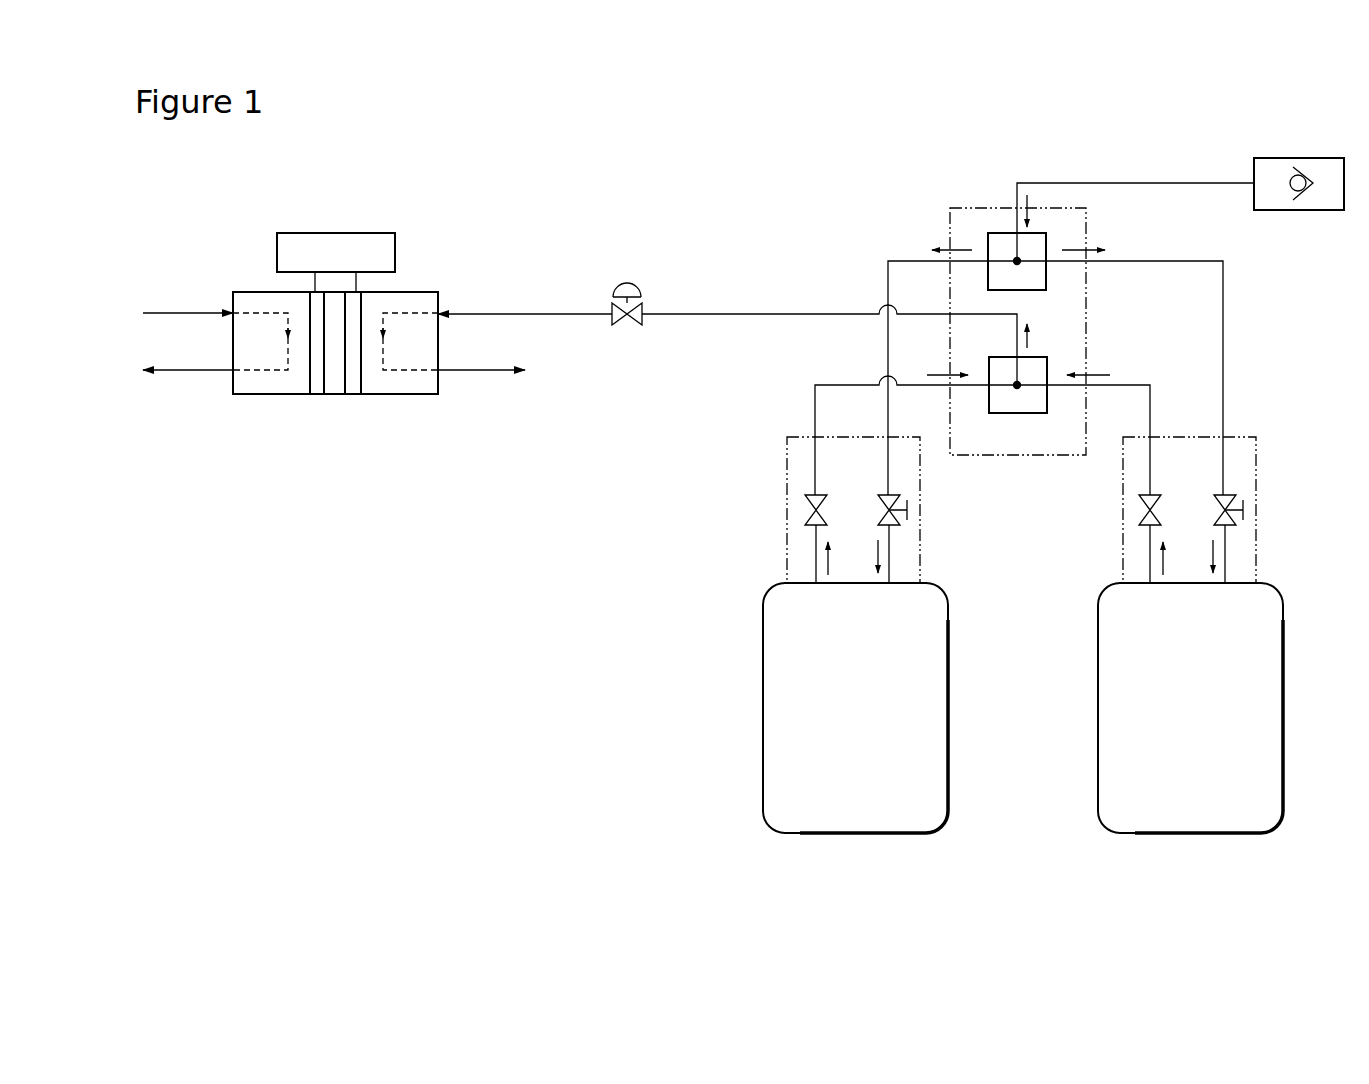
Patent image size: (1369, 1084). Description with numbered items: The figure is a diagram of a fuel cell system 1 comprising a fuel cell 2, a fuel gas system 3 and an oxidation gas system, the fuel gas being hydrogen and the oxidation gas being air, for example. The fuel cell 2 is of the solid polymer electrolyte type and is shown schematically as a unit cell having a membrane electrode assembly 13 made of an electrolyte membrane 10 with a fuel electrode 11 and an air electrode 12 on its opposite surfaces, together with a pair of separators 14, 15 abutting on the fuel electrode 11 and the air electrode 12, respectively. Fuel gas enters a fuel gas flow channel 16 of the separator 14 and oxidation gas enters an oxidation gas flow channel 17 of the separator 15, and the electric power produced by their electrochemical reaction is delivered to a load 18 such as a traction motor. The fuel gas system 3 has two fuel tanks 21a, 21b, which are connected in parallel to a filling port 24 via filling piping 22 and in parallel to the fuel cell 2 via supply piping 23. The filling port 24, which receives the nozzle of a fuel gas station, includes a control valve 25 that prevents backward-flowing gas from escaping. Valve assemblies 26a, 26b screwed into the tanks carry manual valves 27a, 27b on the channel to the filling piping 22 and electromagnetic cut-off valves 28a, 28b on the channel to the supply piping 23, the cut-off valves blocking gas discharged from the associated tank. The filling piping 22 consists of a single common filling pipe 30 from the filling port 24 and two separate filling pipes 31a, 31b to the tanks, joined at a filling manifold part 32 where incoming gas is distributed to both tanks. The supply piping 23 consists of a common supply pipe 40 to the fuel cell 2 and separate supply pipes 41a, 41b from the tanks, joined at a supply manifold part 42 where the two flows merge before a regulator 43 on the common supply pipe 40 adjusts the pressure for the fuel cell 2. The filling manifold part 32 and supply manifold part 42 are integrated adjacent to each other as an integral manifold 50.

The fuel cell system 1 is at (437, 195).
The fuel cell 2 is at (335, 344).
The fuel gas system 3 is at (565, 293).
The electrolyte membrane 10 is at (335, 386).
The fuel electrode 11 is at (373, 370).
The air electrode 12 is at (318, 386).
The membrane electrode assembly 13 is at (338, 388).
The separator 14 is at (425, 390).
The separator 15 is at (258, 386).
The fuel gas flow channel 16 is at (400, 310).
The oxidation gas flow channel 17 is at (268, 310).
The load 18 is at (348, 233).
The fuel tank 21a is at (866, 822).
The fuel tank 21b is at (1205, 820).
The filling piping 22 is at (1158, 181).
The supply piping 23 is at (712, 311).
The filling port 24 is at (1299, 188).
The control valve 25 is at (1304, 192).
The valve assembly 26a is at (809, 510).
The valve assembly 26b is at (1208, 510).
The manual valve 27a is at (882, 493).
The manual valve 27b is at (1218, 493).
The cut-off valve 28a is at (822, 505).
The cut-off valve 28b is at (1143, 505).
The common filling pipe 30 is at (1078, 181).
The separate filling pipe 31a is at (905, 258).
The separate filling pipe 31b is at (1150, 258).
The filling manifold part 32 is at (1032, 290).
The common supply pipe 40 is at (785, 313).
The separate supply pipe 41a is at (853, 383).
The separate supply pipe 41b is at (1135, 383).
The supply manifold part 42 is at (1035, 413).
The regulator 43 is at (632, 283).
The integral manifold 50 is at (1018, 309).